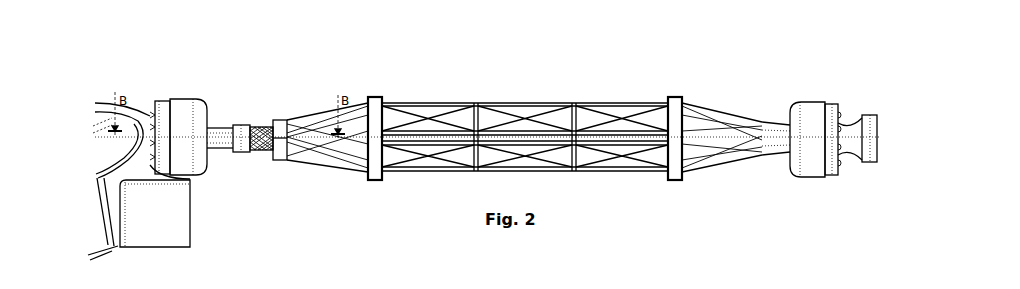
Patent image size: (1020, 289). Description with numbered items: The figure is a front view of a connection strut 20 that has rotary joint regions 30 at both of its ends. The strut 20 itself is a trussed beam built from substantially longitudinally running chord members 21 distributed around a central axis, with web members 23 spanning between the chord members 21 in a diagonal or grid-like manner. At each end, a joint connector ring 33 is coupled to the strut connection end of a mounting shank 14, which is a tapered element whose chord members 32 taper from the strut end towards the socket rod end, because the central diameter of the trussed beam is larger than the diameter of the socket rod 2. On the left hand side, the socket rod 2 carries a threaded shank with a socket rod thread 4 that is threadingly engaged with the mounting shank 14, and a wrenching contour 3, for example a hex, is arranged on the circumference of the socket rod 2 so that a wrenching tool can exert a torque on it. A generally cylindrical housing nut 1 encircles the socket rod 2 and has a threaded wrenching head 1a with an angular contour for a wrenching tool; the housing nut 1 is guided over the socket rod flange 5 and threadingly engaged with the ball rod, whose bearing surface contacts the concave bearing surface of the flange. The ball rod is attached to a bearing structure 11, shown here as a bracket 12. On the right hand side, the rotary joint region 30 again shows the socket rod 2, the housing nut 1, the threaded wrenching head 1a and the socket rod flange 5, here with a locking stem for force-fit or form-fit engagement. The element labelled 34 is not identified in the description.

The housing nut 1 is at (184, 99).
The threaded wrenching head 1a is at (160, 104).
The socket rod 2 is at (222, 150).
The wrenching contour 3 is at (240, 125).
The socket rod thread 4 is at (259, 127).
The socket rod flange 5 is at (867, 162).
The bearing structure 11 is at (152, 112).
The bracket 12 is at (190, 230).
The mounting shank 14 is at (334, 174).
The connection strut 20 is at (525, 114).
The chord members 21 is at (455, 105).
The web members 23 is at (408, 118).
The rotary joint region 30 is at (212, 95).
The chord members 32 is at (312, 113).
The joint connector ring 33 is at (373, 97).
The hub 34 is at (283, 120).